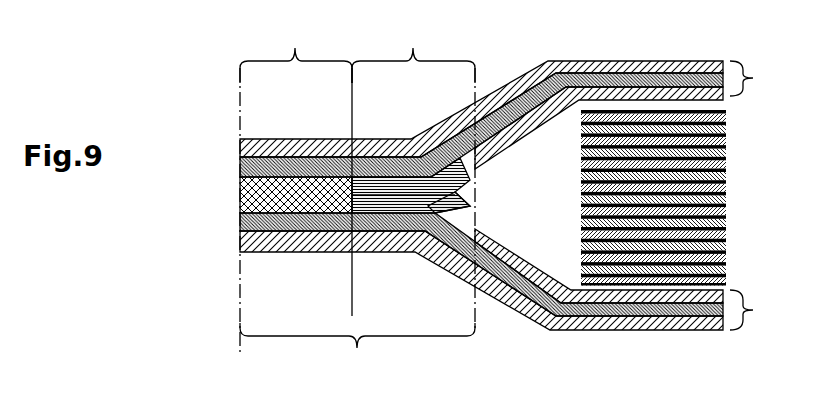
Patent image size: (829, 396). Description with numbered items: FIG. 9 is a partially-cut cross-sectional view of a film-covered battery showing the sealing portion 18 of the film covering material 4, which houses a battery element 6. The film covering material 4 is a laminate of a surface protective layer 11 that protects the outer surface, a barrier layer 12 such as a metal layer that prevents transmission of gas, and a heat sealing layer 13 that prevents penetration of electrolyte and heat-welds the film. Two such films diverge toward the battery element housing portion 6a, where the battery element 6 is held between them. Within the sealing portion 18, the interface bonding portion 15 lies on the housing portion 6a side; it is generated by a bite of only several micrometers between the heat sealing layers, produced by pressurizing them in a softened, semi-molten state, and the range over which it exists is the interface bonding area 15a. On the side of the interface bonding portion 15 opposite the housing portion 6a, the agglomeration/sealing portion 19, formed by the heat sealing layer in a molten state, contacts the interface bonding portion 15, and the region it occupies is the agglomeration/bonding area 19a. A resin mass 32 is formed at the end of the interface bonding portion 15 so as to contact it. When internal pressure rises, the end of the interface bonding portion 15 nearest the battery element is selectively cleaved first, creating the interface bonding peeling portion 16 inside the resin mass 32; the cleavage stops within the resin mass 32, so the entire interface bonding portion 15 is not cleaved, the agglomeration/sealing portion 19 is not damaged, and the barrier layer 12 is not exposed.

The film covering material 4 is at (755, 195).
The battery element 6 is at (737, 144).
The battery element housing portion 6a is at (531, 134).
The surface protective layer 11 is at (232, 137).
The barrier layer 12 is at (232, 157).
The heat sealing layer 13 is at (232, 185).
The interface bonding portion 15 is at (378, 197).
The interface bonding area 15a is at (413, 50).
The interface bonding peeling portion 16 is at (440, 215).
The sealing portion 18 is at (357, 353).
The agglomeration/sealing portion 19 is at (285, 212).
The agglomeration/bonding area 19a is at (296, 50).
The resin mass 32 is at (458, 228).